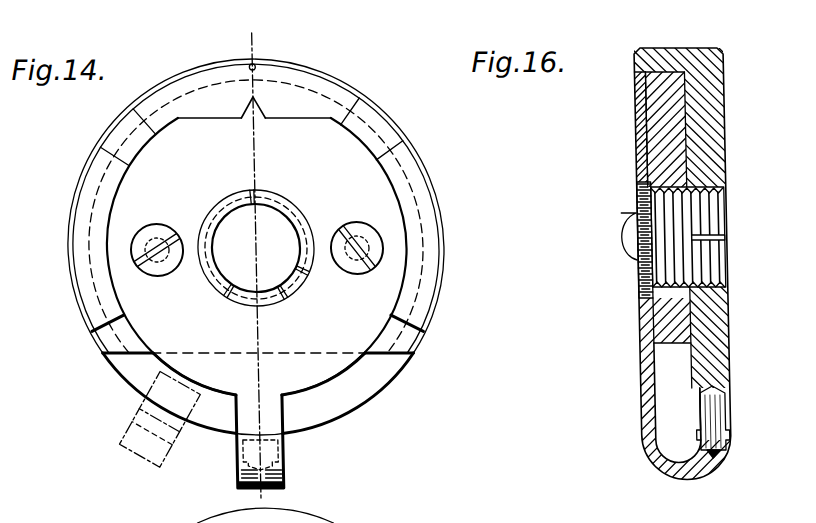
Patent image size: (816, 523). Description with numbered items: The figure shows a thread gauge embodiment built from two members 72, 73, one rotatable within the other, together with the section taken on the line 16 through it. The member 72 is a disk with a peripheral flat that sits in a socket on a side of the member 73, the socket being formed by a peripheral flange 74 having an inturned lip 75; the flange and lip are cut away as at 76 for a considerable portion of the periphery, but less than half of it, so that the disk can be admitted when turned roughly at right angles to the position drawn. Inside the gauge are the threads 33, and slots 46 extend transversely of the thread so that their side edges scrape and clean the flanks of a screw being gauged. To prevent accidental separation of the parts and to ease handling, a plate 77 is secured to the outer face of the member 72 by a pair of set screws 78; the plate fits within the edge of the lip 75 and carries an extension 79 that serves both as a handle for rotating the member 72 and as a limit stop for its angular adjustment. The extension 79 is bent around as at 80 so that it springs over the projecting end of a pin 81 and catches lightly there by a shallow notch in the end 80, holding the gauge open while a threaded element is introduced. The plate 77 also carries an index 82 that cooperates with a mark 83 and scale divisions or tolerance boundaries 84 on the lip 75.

In FIG. 14, the section line 16 is at (290, 498).
In FIG. 16, the threads 33 is at (711, 213).
In FIG. 14, the slots 46 is at (308, 270).
In FIG. 16, the slots 46 is at (645, 270).
In FIG. 14, the member 72 is at (291, 112).
In FIG. 16, the member 72 is at (670, 142).
In FIG. 16, the member 73 is at (707, 162).
In FIG. 14, the peripheral flange 74 is at (358, 88).
In FIG. 16, the peripheral flange 74 is at (659, 62).
In FIG. 14, the inturned lip 75 is at (403, 172).
In FIG. 16, the inturned lip 75 is at (633, 78).
In FIG. 14, the cut-away portion 76 is at (352, 380).
In FIG. 14, the plate 77 is at (383, 199).
In FIG. 16, the plate 77 is at (640, 118).
In FIG. 14, the set screws 78 is at (145, 233).
In FIG. 14, the extension 79 is at (264, 418).
In FIG. 16, the extension 79 is at (636, 430).
In FIG. 16, the bent end 80 is at (706, 458).
In FIG. 16, the pin 81 is at (709, 438).
In FIG. 14, the index 82 is at (276, 97).
In FIG. 14, the mark 83 is at (247, 68).
In FIG. 14, the scale divisions 84 is at (110, 143).